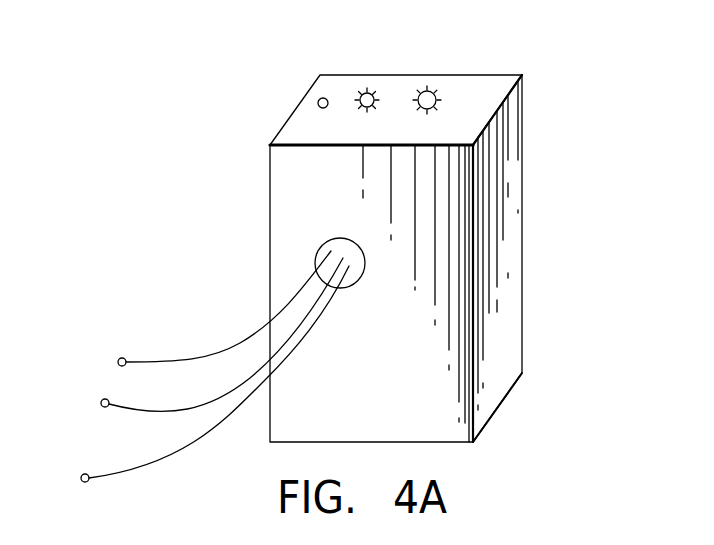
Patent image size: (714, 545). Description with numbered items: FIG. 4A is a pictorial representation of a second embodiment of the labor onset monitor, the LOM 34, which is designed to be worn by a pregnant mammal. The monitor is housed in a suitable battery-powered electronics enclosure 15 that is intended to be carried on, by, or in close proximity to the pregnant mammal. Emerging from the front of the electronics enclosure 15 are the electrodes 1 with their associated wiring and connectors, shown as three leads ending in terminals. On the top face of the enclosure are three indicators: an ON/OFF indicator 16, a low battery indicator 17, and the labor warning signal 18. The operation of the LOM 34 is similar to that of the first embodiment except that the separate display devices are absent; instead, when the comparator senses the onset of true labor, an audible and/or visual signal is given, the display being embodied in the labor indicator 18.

The electrodes 1 is at (67, 337).
The electronics enclosure 15 is at (522, 275).
The ON/OFF indicator 16 is at (317, 103).
The low battery indicator 17 is at (372, 94).
The labor warning signal 18 is at (450, 72).
The LOM 34 is at (520, 423).